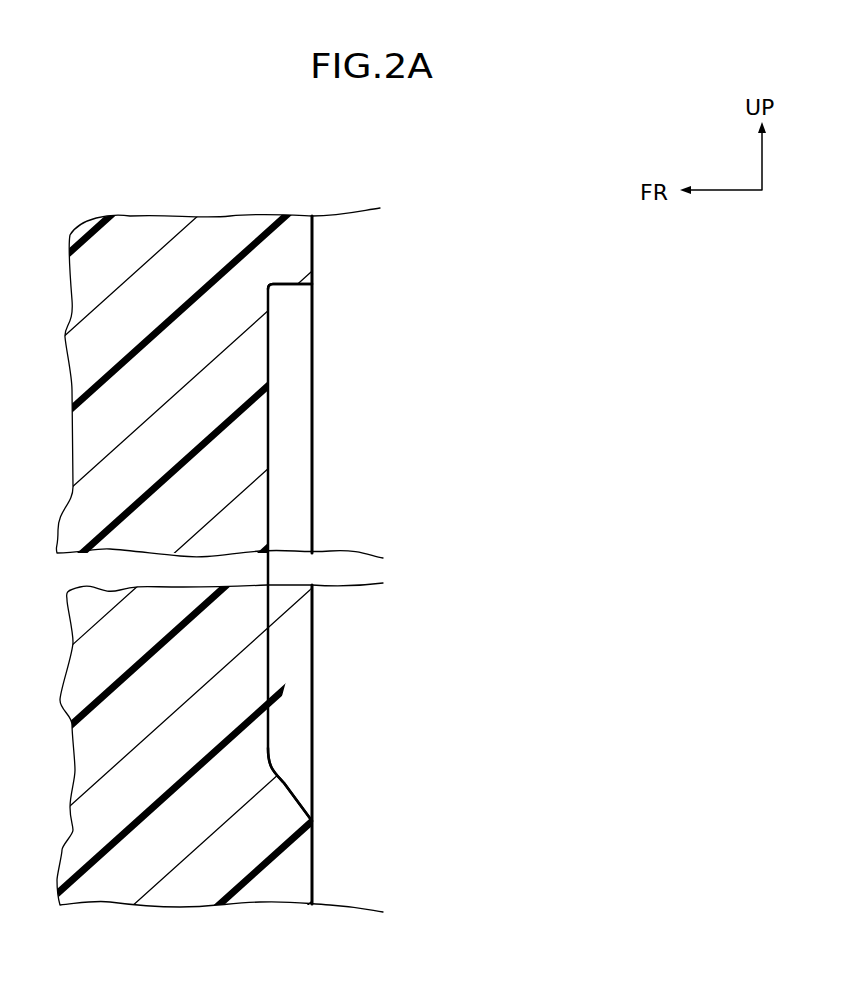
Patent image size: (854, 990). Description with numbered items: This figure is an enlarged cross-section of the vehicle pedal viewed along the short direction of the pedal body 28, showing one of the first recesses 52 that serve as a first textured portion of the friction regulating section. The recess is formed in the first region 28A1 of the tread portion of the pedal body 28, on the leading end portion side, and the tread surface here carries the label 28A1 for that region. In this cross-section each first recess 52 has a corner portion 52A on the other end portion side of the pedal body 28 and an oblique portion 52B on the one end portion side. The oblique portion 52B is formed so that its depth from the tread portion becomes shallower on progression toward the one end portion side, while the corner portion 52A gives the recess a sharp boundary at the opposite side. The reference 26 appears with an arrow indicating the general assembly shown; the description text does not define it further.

The vehicle body side structure 26 is at (534, 210).
The pedal body 28 is at (212, 193).
The first region 28A1 is at (313, 249).
The first recess 52 is at (277, 371).
The corner portion 52A is at (313, 286).
The oblique portion 52B is at (290, 791).